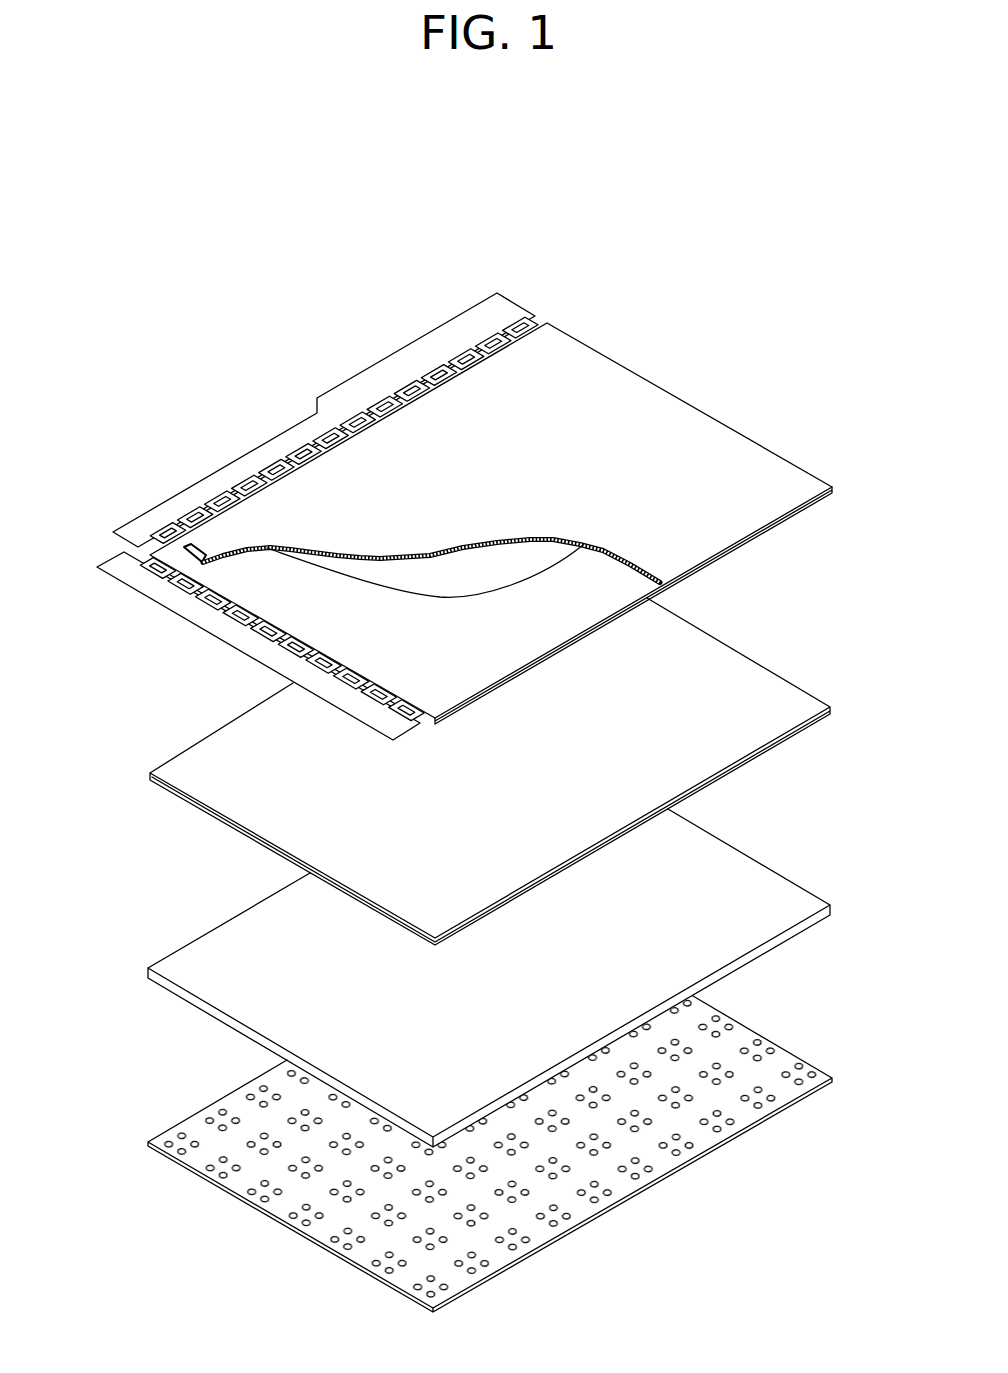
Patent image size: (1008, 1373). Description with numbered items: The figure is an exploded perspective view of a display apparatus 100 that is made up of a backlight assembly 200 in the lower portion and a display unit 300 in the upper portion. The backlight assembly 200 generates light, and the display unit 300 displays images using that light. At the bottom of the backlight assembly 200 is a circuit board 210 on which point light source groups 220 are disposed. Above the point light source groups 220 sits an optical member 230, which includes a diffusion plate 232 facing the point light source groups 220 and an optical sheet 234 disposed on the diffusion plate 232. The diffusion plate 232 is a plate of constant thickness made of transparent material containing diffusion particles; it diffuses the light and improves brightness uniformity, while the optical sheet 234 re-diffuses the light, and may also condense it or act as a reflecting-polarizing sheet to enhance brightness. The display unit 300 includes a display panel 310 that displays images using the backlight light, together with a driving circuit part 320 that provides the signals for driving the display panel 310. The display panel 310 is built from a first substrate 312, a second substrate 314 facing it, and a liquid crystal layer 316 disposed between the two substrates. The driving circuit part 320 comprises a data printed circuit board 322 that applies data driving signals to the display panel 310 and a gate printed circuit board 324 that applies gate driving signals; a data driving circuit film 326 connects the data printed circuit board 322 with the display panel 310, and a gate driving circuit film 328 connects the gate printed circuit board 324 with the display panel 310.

The display apparatus 100 is at (648, 252).
The backlight assembly 200 is at (860, 1178).
The circuit board 210 is at (489, 1152).
The point light source groups 220 is at (297, 1213).
The optical member 230 is at (112, 826).
The diffusion plate 232 is at (227, 932).
The optical sheet 234 is at (237, 807).
The display unit 300 is at (138, 476).
The display panel 310 is at (784, 414).
The first substrate 312 is at (560, 623).
The second substrate 314 is at (688, 542).
The liquid crystal layer 316 is at (503, 558).
The driving circuit part 320 is at (91, 552).
The data printed circuit board 322 is at (395, 360).
The gate printed circuit board 324 is at (135, 583).
The data driving circuit film 326 is at (455, 358).
The gate driving circuit film 328 is at (173, 580).